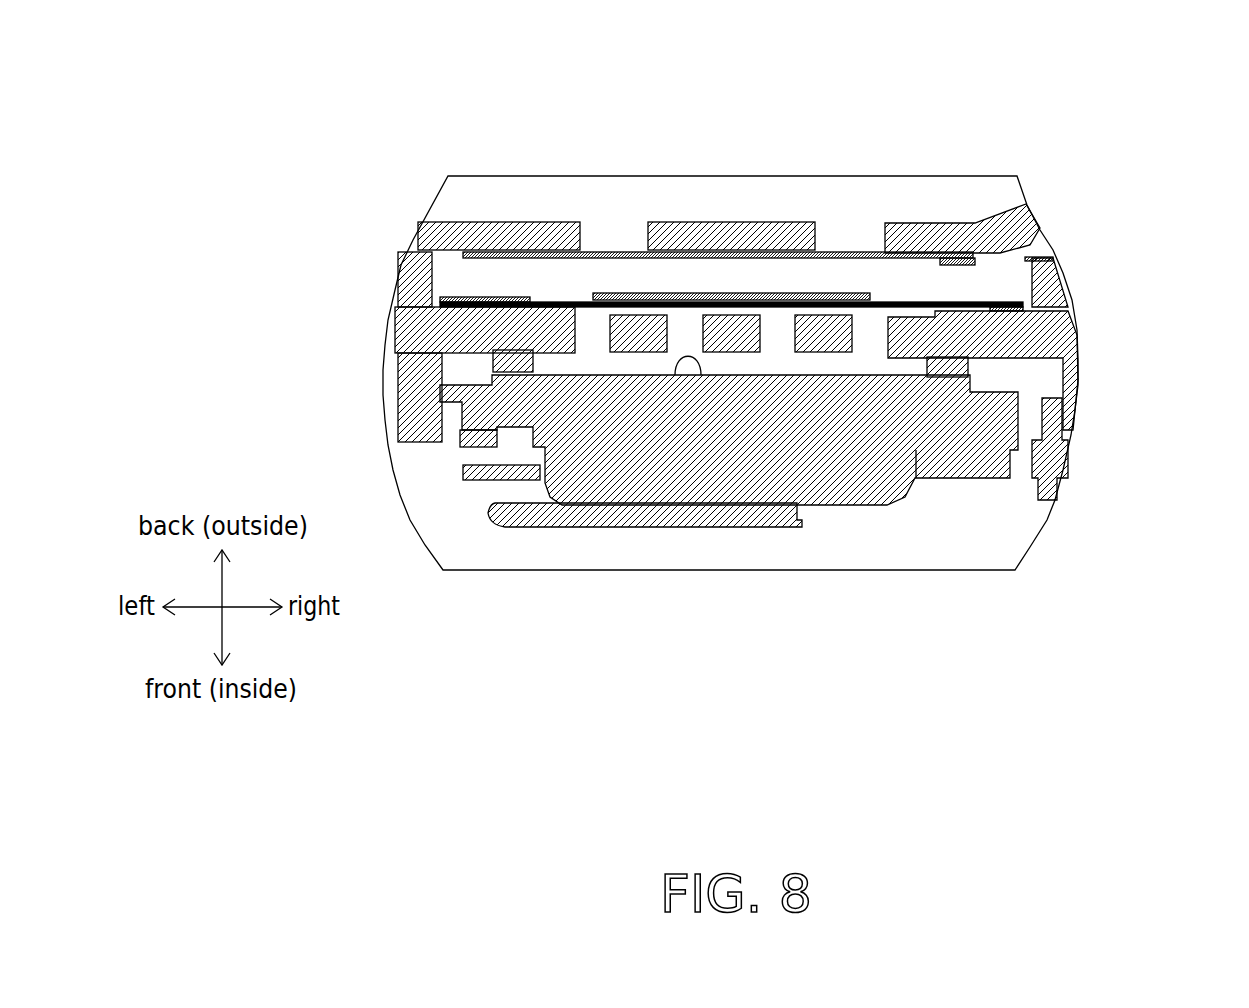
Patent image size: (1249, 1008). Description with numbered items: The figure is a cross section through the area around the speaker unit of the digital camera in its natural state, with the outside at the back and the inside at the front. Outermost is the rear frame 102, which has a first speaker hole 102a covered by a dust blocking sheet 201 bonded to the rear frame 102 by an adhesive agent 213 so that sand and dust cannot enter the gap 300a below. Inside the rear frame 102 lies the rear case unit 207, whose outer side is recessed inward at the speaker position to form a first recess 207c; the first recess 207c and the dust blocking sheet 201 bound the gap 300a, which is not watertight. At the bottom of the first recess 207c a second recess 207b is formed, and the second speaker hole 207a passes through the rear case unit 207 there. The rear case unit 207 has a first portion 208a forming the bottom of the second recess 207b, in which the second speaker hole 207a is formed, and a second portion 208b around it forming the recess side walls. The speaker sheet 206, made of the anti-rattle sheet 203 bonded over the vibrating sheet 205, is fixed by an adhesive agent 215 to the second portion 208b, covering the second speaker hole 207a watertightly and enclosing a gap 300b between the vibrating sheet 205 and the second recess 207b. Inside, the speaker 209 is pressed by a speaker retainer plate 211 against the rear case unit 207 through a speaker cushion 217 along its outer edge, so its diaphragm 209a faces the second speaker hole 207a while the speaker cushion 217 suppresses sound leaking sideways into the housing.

The rear frame 102 is at (492, 235).
The first speaker hole 102a is at (582, 238).
The dust blocking sheet 201 is at (633, 252).
The anti-rattle sheet 203 is at (823, 295).
The vibrating sheet 205 is at (910, 303).
The speaker sheet 206 is at (1075, 75).
The rear case unit 207 is at (990, 332).
The second speaker hole 207a is at (702, 332).
The second recess 207b is at (527, 306).
The first recess 207c is at (1030, 285).
The first portion 208a is at (730, 352).
The second portion 208b is at (465, 350).
The speaker 209 is at (905, 478).
The diaphragm 209a is at (675, 375).
The speaker retainer plate 211 is at (760, 527).
The adhesive agent 213 is at (1035, 235).
The adhesive agent 215 is at (1063, 307).
The speaker cushion 217 is at (495, 352).
The gap 300a is at (560, 268).
The gap 300b is at (650, 308).